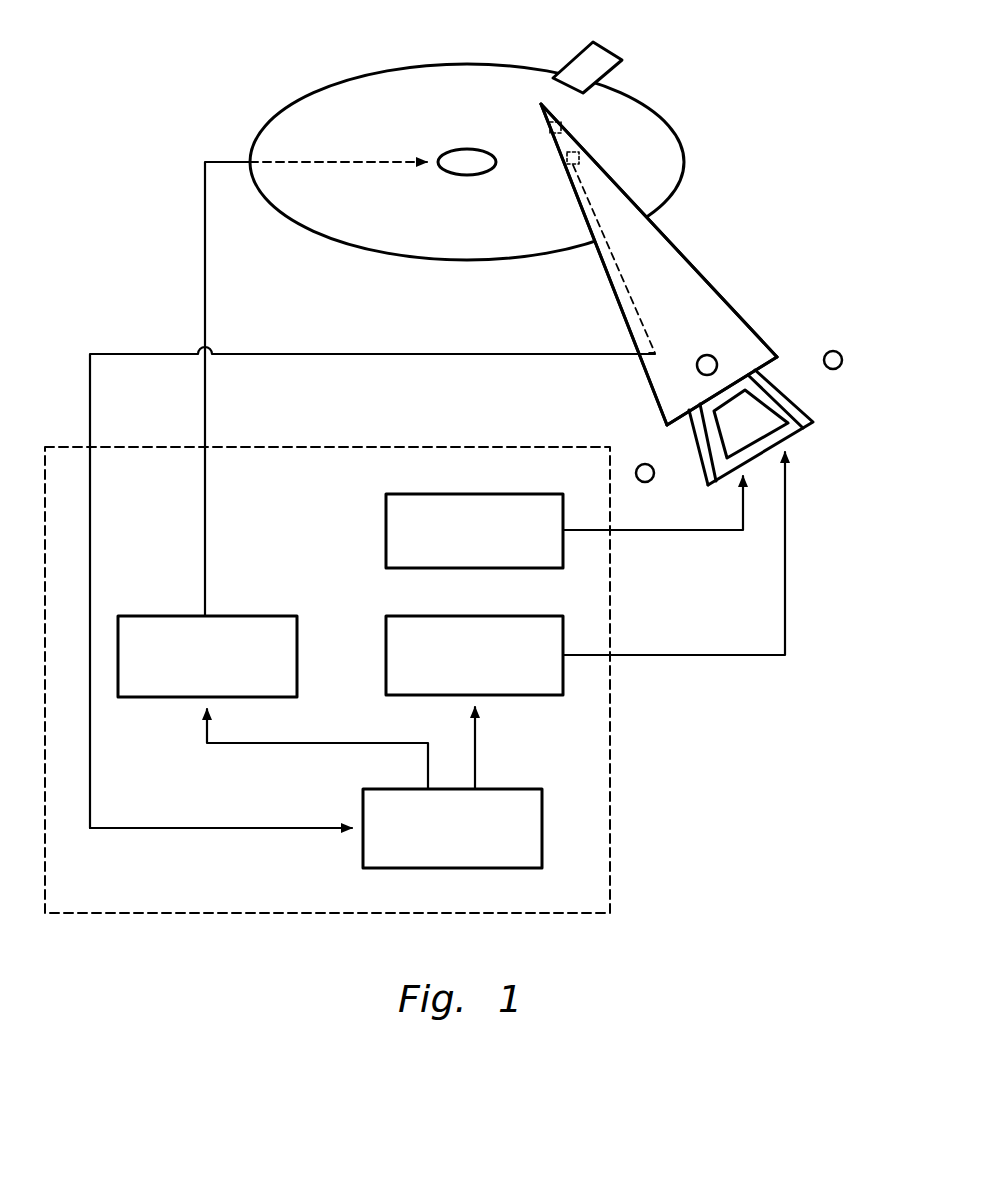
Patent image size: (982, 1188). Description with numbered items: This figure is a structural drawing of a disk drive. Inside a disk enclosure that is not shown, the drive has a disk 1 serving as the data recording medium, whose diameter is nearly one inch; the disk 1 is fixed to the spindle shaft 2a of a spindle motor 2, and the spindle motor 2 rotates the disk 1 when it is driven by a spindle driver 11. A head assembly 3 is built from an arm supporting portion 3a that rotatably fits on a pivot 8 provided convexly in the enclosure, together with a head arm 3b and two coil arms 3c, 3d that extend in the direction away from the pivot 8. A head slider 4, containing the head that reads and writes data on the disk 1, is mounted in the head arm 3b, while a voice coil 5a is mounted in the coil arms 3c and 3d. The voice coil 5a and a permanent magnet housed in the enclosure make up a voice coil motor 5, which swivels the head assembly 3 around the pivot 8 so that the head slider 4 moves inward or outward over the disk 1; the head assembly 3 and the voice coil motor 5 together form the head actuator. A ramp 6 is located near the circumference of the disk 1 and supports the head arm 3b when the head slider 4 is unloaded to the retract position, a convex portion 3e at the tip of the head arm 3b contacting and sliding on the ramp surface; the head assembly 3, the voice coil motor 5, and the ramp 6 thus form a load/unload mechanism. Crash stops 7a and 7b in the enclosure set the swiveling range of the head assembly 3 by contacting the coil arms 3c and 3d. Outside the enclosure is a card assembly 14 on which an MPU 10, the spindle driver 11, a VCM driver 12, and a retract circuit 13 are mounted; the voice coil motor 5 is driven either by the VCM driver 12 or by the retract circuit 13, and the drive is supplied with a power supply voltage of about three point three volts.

The disk 1 is at (258, 103).
The spindle motor 2 is at (472, 177).
The spindle shaft 2a is at (483, 149).
The head assembly 3 is at (681, 294).
The arm supporting portion 3a is at (660, 366).
The head arm 3b is at (648, 254).
The coil arm 3c is at (692, 436).
The coil arm 3d is at (774, 381).
The convex portion 3e is at (566, 127).
The head slider 4 is at (584, 157).
The voice coil motor 5 is at (756, 447).
The voice coil 5a is at (712, 450).
The ramp 6 is at (604, 44).
The crash stop 7a is at (645, 482).
The crash stop 7b is at (833, 369).
The pivot 8 is at (707, 355).
The MPU 10 is at (507, 789).
The spindle driver 11 is at (271, 616).
The VCM driver 12 is at (537, 616).
The retract circuit 13 is at (537, 494).
The card assembly 14 is at (600, 447).